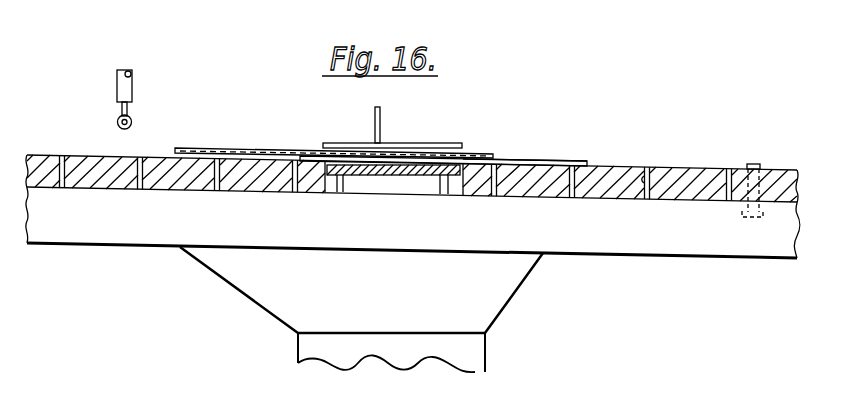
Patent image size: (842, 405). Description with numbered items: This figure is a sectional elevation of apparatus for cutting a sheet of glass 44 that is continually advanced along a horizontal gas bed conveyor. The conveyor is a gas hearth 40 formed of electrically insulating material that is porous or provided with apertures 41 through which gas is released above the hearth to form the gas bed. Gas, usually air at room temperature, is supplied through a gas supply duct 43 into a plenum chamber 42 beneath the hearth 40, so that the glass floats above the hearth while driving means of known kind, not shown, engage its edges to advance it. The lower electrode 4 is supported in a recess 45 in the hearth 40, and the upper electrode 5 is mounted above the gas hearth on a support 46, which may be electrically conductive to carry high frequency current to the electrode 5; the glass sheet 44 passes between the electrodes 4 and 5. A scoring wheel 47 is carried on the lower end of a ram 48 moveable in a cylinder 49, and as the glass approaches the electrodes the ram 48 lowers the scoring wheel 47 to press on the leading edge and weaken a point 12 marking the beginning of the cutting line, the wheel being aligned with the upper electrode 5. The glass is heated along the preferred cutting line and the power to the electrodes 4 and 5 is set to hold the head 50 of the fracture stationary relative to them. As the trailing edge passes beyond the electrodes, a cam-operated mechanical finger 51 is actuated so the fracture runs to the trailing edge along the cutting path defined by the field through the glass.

The electrode 4 is at (430, 175).
The electrode 5 is at (426, 146).
The weakened point 12 is at (585, 160).
The gas hearth 40 is at (692, 168).
The apertures 41 is at (640, 170).
The plenum chamber 42 is at (647, 244).
The gas supply duct 43 is at (468, 352).
The sheet of glass 44 is at (236, 147).
The recess 45 is at (380, 192).
The support 46 is at (381, 128).
The scoring wheel 47 is at (133, 122).
The ram 48 is at (133, 108).
The cylinder 49 is at (133, 78).
The head of the fracture 50 is at (497, 158).
The cam-operated mechanical finger 51 is at (755, 164).